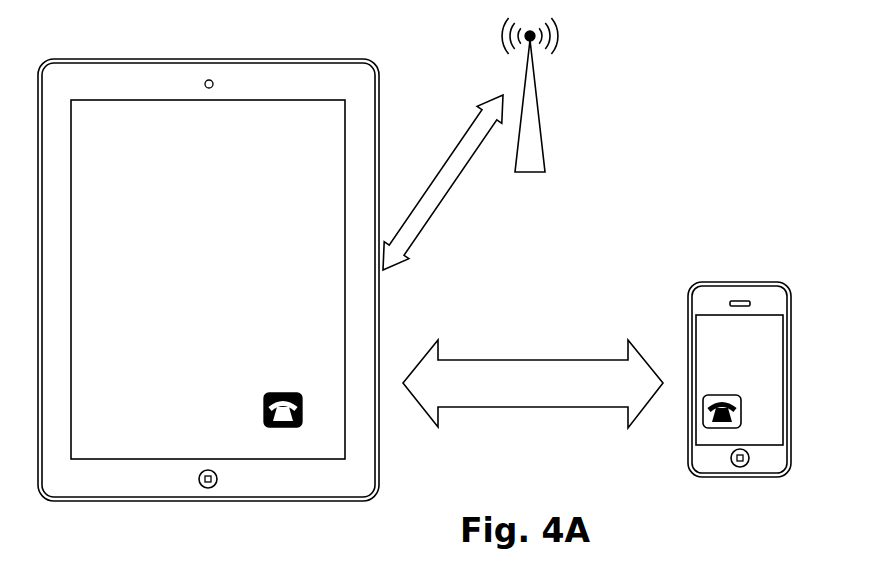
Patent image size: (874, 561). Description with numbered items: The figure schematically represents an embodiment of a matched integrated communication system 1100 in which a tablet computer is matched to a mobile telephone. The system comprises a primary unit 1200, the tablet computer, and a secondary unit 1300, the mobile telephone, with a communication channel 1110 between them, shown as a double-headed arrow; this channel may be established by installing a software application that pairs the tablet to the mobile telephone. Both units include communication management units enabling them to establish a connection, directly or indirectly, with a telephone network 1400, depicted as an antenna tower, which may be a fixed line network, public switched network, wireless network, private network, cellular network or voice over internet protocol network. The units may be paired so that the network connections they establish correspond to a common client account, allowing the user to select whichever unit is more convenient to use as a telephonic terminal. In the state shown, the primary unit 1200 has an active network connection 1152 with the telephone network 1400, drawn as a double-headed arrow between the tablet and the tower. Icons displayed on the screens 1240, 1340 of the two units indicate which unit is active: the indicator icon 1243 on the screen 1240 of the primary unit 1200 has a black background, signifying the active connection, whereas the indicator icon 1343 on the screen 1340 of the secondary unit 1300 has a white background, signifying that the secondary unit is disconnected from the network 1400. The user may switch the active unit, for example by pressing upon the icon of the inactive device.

The integrated communication system 1100 is at (703, 123).
The primary unit 1200 is at (379, 438).
The screen 1240 is at (328, 282).
The indicator icon 1243 is at (275, 393).
The network connection 1152 is at (450, 168).
The telephone network 1400 is at (534, 133).
The communication channel 1110 is at (513, 377).
The secondary unit 1300 is at (693, 447).
The screen 1340 is at (757, 407).
The indicator icon 1343 is at (725, 395).